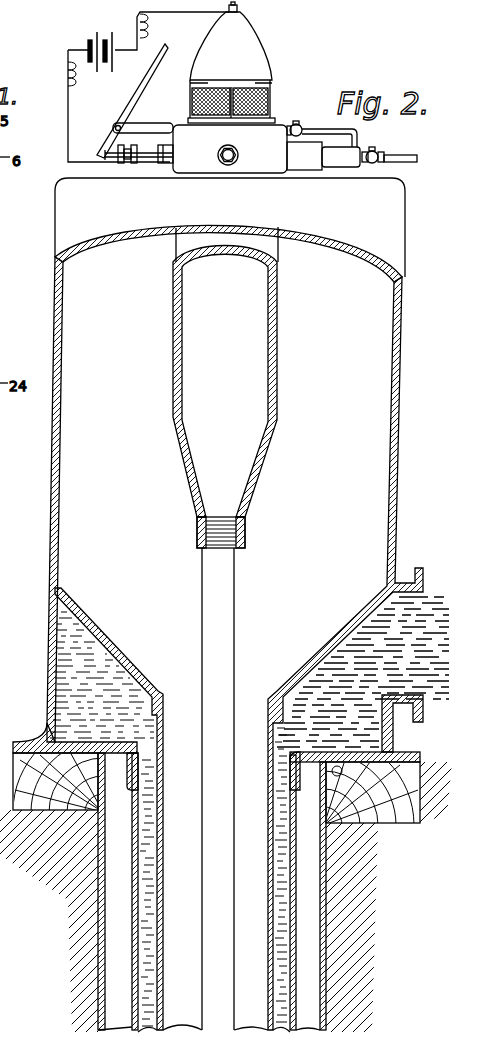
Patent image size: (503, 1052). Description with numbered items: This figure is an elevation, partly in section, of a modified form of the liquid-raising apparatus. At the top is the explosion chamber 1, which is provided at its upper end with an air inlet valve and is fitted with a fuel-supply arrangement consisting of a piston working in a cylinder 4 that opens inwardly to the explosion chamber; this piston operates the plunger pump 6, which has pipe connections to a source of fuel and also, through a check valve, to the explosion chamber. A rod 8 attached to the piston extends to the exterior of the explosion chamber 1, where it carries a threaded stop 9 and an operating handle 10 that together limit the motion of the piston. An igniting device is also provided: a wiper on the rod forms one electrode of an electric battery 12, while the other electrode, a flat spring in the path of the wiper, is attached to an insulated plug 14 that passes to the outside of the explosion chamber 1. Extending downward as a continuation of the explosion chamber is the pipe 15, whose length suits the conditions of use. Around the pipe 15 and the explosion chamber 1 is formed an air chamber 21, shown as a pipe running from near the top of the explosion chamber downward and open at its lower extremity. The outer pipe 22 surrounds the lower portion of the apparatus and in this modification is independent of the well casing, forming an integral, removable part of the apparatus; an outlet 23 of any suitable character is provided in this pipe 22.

The explosion chamber 1 is at (225, 387).
The cylinder 4 is at (304, 156).
The plunger pump 6 is at (341, 157).
The rod 8 is at (147, 147).
The threaded stop 9 is at (128, 161).
The operating handle 10 is at (123, 114).
The electric battery 12 is at (104, 73).
The insulated plug 14 is at (218, 152).
The pipe 15 is at (218, 789).
The air chamber 21 is at (186, 782).
The pipe 22 is at (133, 957).
The outlet 23 is at (363, 672).